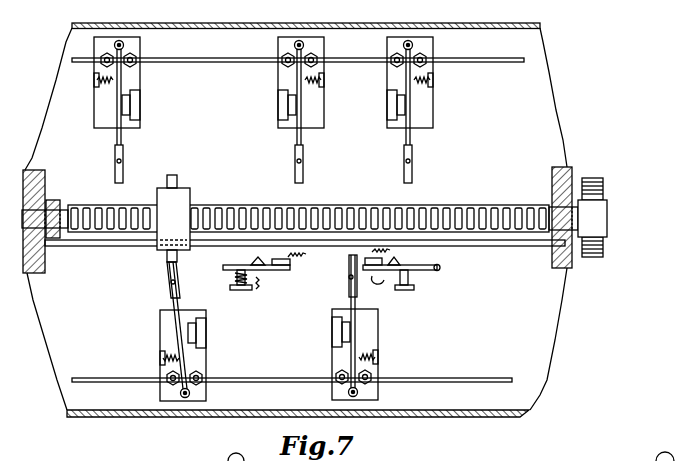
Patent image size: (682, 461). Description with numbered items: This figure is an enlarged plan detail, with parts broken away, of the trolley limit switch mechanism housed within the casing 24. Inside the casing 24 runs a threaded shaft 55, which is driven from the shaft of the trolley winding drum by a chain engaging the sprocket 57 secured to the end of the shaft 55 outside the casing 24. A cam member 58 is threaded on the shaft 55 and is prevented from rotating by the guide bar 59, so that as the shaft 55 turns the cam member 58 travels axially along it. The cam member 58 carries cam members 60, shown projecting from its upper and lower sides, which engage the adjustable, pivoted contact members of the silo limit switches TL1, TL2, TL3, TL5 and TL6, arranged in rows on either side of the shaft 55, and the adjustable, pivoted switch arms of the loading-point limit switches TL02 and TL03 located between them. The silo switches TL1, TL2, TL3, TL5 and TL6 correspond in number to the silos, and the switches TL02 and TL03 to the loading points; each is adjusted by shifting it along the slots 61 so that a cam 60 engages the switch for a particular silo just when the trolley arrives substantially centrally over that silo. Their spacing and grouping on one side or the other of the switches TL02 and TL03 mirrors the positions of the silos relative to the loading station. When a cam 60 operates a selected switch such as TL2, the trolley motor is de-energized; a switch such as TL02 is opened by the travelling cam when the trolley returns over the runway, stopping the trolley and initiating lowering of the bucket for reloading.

The casing 24 is at (520, 411).
The threaded shaft 55 is at (492, 200).
The sprocket 57 is at (605, 182).
The cam member 58 is at (190, 194).
The guide bar 59 is at (485, 250).
The cam members 60 is at (174, 174).
The slots 61 is at (226, 62).
The limit switch TL1 is at (140, 90).
The limit switch TL2 is at (160, 322).
The limit switch TL3 is at (324, 119).
The limit switch TL5 is at (377, 318).
The limit switch TL6 is at (433, 118).
The limit switch TL02 is at (270, 272).
The limit switch TL03 is at (425, 270).